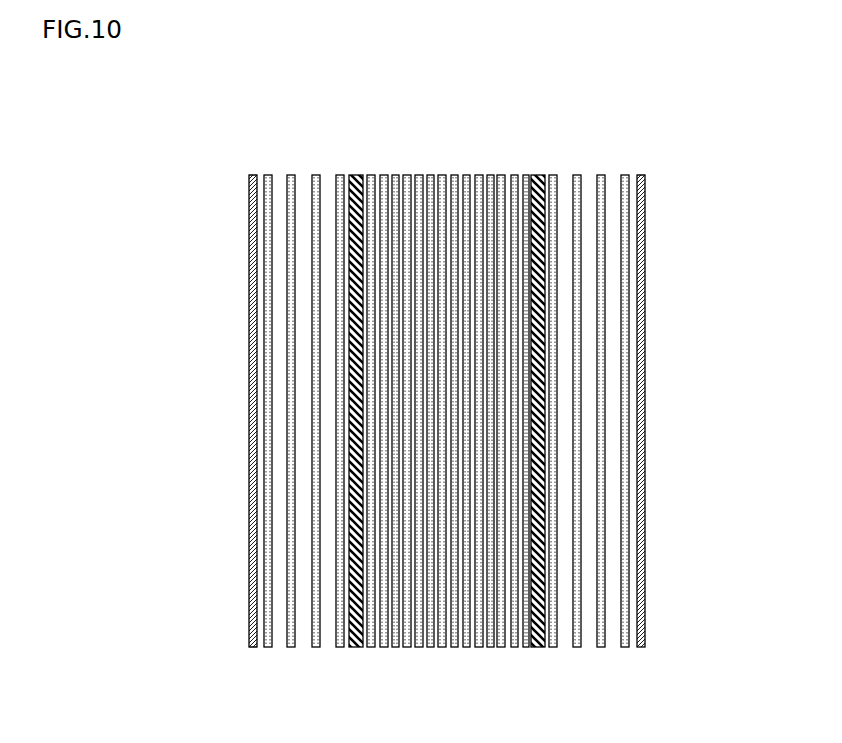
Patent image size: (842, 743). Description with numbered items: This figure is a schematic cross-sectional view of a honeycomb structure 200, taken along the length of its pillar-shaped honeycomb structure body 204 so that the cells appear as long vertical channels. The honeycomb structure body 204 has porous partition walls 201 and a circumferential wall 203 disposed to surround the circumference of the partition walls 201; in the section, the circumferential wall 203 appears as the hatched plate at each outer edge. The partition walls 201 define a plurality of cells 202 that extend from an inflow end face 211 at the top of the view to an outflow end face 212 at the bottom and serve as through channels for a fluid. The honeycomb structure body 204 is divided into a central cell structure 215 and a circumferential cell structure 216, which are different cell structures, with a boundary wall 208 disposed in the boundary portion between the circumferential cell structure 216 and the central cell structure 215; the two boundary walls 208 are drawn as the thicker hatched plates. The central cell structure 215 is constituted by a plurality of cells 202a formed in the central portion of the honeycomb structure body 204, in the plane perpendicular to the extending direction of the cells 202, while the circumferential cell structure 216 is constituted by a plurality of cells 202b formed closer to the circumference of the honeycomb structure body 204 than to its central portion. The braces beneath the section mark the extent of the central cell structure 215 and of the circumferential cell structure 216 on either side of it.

The honeycomb structure 200 is at (702, 70).
The partition walls 201 is at (500, 186).
The cells 202 is at (420, 363).
The cells of the central cell structure 202a is at (413, 195).
The cells of the circumferential cell structure 202b is at (329, 192).
The circumferential wall 203 is at (249, 360).
The honeycomb structure body 204 is at (650, 272).
The boundary wall 208 is at (350, 500).
The inflow end face 211 is at (257, 165).
The outflow end face 212 is at (252, 672).
The central cell structure 215 is at (528, 658).
The circumferential cell structure 216 is at (348, 658).